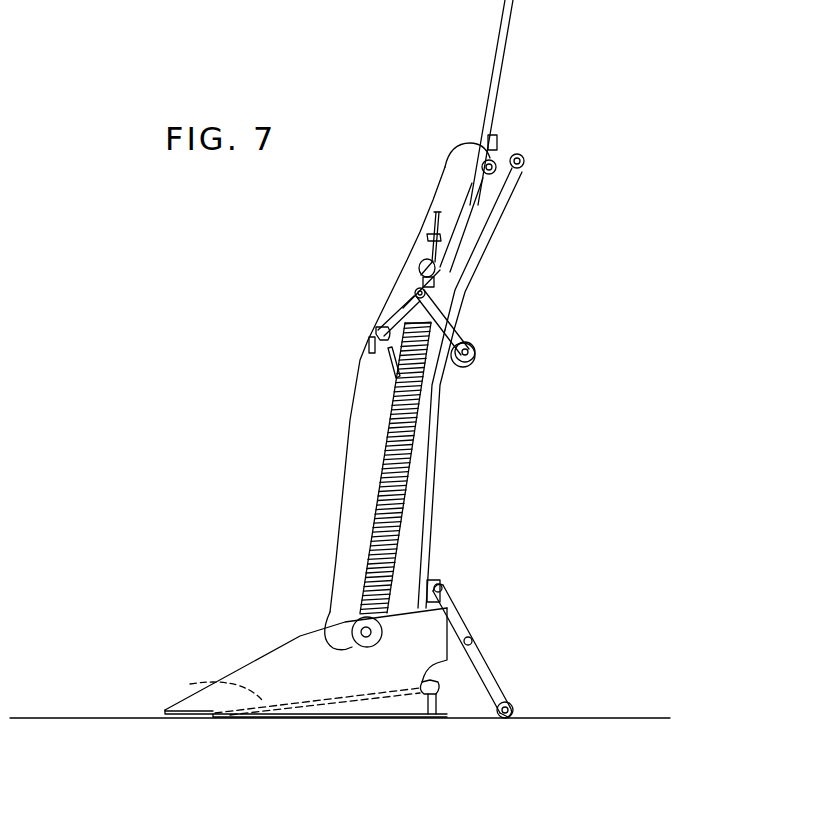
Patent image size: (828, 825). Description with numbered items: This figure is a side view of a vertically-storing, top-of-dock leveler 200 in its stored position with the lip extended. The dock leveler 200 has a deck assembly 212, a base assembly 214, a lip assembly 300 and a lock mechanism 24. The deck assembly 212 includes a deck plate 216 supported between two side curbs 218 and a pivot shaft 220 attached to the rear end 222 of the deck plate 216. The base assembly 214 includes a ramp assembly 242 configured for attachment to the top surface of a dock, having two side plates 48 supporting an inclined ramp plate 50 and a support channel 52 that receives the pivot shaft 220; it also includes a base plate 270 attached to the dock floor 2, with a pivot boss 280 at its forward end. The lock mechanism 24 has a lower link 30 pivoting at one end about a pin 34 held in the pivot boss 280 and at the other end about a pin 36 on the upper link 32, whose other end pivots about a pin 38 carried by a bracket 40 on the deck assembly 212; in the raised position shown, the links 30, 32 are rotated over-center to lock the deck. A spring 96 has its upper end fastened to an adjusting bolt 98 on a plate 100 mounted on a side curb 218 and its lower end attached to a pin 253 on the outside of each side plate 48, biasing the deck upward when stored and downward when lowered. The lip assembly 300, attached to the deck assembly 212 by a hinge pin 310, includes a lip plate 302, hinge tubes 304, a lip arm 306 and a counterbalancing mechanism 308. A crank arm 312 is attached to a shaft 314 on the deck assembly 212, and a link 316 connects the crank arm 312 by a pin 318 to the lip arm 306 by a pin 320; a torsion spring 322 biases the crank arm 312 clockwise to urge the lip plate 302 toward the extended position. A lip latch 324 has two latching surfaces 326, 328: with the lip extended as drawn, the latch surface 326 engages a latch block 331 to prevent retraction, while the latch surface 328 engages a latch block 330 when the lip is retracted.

The dock floor 2 is at (52, 716).
The lock mechanism 24 is at (548, 630).
The lower link 30 is at (490, 668).
The upper link 32 is at (458, 612).
The pin 34 is at (515, 707).
The pin 36 is at (475, 640).
The pin 38 is at (447, 586).
The bracket 40 is at (437, 582).
The side plates 48 is at (272, 650).
The inclined ramp plate 50 is at (190, 684).
The support channel 52 is at (440, 688).
The spring 96 is at (376, 493).
The adjusting bolt 98 is at (430, 215).
The plate 100 is at (428, 240).
The dock leveler 200 is at (734, 243).
The deck assembly 212 is at (528, 260).
The base assembly 214 is at (162, 634).
The deck plate 216 is at (440, 416).
The side curbs 218 is at (365, 423).
The pivot shaft 220 is at (423, 717).
The rear end 222 is at (337, 578).
The ramp assembly 242 is at (257, 650).
The pin 253 is at (322, 643).
The base plate 270 is at (324, 720).
The pivot boss 280 is at (505, 700).
The lip assembly 300 is at (596, 37).
The lip plate 302 is at (497, 92).
The hinge tubes 304 is at (498, 150).
The lip arm 306 is at (524, 158).
The counterbalancing mechanism 308 is at (485, 229).
The hinge pin 310 is at (478, 172).
The crank arm 312 is at (457, 323).
The shaft 314 is at (478, 352).
The link 316 is at (483, 200).
The pin 318 is at (413, 292).
The pin 320 is at (533, 170).
The torsion spring 322 is at (470, 344).
The lip latch 324 is at (403, 308).
The latch surface 326 is at (372, 332).
The latch surface 328 is at (388, 324).
The latch block 330 is at (387, 368).
The latch block 331 is at (370, 347).